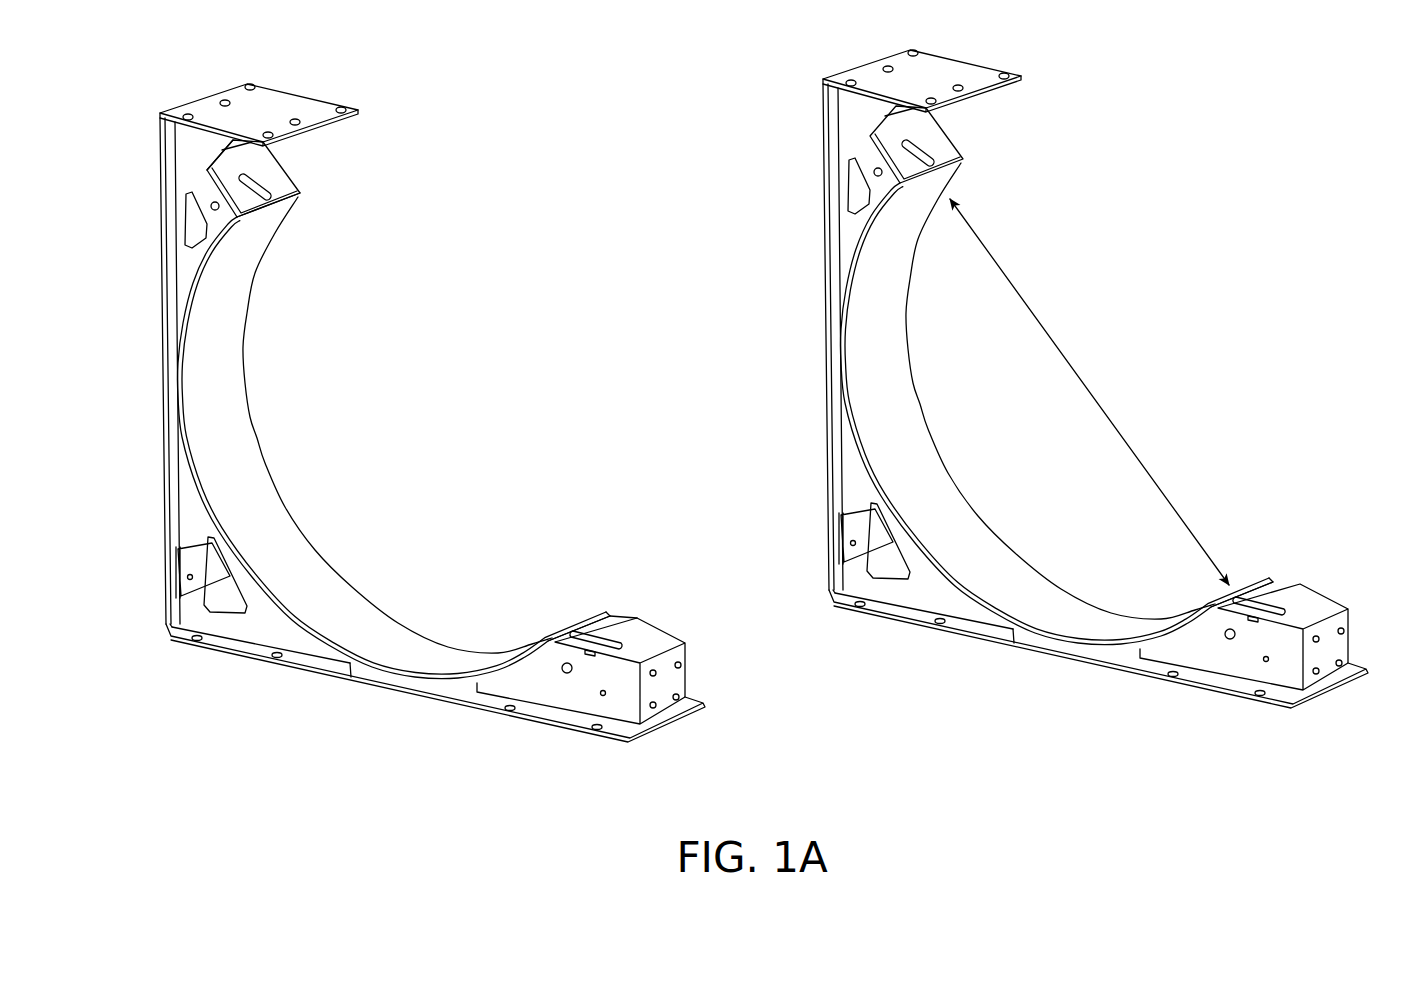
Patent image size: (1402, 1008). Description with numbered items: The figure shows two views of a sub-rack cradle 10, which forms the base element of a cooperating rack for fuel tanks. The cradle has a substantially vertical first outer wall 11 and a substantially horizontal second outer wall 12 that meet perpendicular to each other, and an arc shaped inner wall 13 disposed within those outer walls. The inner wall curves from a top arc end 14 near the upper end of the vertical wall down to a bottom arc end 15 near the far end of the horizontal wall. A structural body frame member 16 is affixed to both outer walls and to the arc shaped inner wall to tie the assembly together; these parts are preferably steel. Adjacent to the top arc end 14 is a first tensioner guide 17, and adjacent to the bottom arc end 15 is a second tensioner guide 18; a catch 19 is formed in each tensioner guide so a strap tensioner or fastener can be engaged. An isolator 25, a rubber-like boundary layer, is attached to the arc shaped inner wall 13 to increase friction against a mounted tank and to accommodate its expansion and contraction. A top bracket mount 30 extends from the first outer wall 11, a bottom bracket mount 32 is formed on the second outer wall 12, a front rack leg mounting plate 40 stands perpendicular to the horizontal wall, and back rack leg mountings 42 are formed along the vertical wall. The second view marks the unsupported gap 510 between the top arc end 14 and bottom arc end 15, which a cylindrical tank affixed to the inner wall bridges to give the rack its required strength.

The sub-rack cradle 10 is at (104, 264).
The first outer wall 11 is at (158, 178).
The second outer wall 12 is at (397, 692).
The arc shaped inner wall 13 is at (351, 668).
The top arc end 14 is at (299, 214).
The bottom arc end 15 is at (582, 615).
The structural body frame member 16 is at (258, 638).
The first tensioner guide 17 is at (264, 171).
The second tensioner guide 18 is at (624, 628).
The catch 19 is at (262, 184).
The isolator 25 is at (268, 463).
The top bracket mount 30 is at (243, 119).
The bottom bracket mount 32 is at (182, 653).
The front rack leg mounting plate 40 is at (702, 673).
The back rack leg mountings 42 is at (155, 195).
The unsupported gap 510 is at (1066, 354).